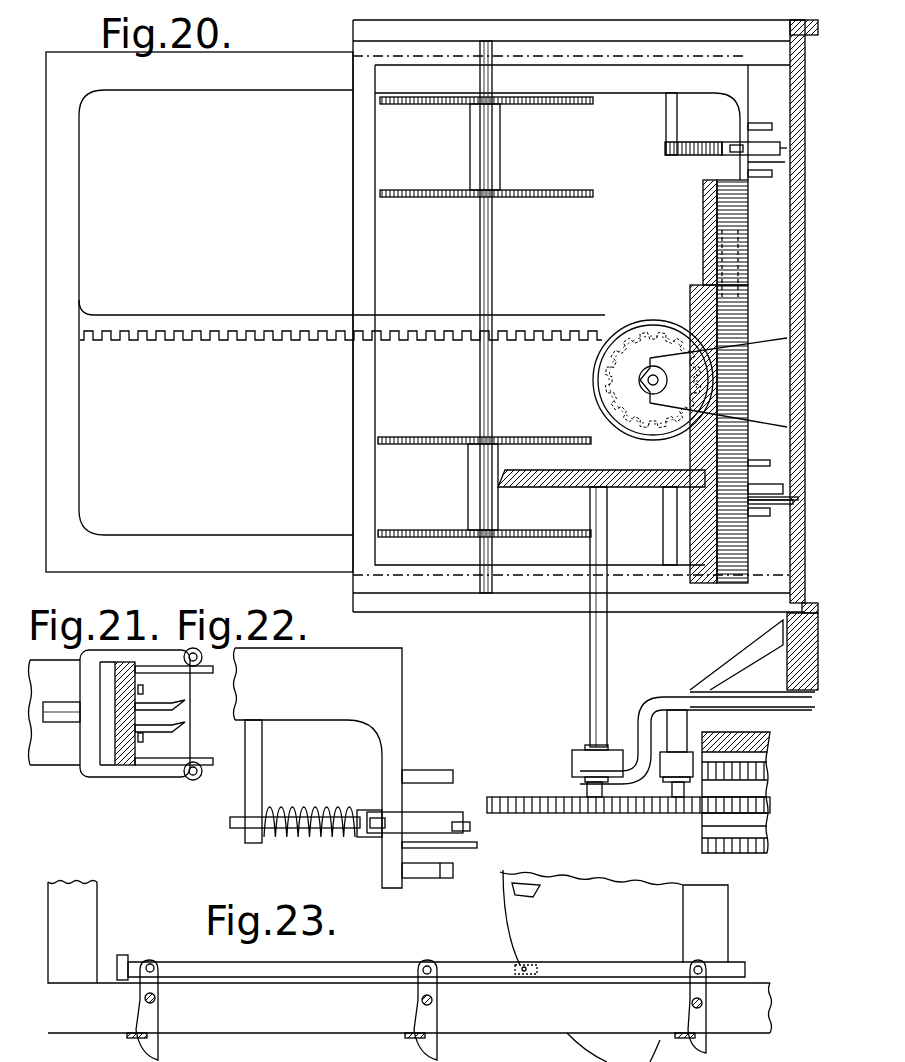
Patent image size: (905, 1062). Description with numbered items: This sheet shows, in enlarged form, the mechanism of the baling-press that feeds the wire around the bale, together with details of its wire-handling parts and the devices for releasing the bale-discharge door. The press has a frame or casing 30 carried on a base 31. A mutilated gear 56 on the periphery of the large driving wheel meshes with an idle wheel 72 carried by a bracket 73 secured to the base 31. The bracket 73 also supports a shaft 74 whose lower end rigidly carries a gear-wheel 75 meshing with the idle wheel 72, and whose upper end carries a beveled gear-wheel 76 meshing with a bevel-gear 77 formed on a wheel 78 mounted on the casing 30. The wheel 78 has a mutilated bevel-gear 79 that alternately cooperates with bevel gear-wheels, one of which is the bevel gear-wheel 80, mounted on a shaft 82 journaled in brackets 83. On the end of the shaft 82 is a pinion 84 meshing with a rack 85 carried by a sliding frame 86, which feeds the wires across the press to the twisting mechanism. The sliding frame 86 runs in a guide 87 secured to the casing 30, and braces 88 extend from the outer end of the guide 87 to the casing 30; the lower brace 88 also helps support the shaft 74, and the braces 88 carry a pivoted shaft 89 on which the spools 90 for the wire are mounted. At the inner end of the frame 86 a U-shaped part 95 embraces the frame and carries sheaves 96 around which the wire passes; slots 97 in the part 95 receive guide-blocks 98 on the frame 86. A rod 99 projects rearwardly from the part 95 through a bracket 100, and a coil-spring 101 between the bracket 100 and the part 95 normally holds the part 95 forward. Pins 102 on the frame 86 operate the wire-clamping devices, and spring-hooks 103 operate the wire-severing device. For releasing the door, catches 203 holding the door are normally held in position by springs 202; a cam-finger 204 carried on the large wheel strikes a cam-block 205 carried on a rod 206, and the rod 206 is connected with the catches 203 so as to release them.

In FIG. 20, the frame or casing 30 is at (793, 238).
In FIG. 20, the base 31 is at (792, 673).
In FIG. 23, the base 31 is at (410, 966).
In FIG. 20, the mutilated gear 56 is at (755, 805).
In FIG. 20, the idle wheel 72 is at (678, 815).
In FIG. 20, the bracket 73 is at (678, 697).
In FIG. 20, the shaft 74 is at (598, 660).
In FIG. 20, the gear-wheel 75 is at (535, 800).
In FIG. 20, the beveled gear-wheel 76 is at (590, 476).
In FIG. 20, the bevel-gear 77 is at (690, 455).
In FIG. 20, the wheel 78 is at (734, 275).
In FIG. 20, the mutilated bevel-gear 79 is at (703, 203).
In FIG. 20, the bevel gear-wheel 80 is at (650, 327).
In FIG. 20, the shaft 82 is at (640, 382).
In FIG. 20, the brackets 83 is at (762, 344).
In FIG. 20, the pinion 84 is at (612, 376).
In FIG. 20, the rack 85 is at (536, 328).
In FIG. 20, the sliding frame 86 is at (204, 548).
In FIG. 22, the sliding frame 86 is at (318, 768).
In FIG. 20, the guide 87 is at (356, 258).
In FIG. 20, the braces 88 is at (640, 33).
In FIG. 20, the shaft 89 is at (490, 378).
In FIG. 20, the spools 90 is at (533, 196).
In FIG. 20, the U-shaped part 95 is at (738, 150).
In FIG. 21, the U-shaped part 95 is at (97, 768).
In FIG. 22, the U-shaped part 95 is at (363, 812).
In FIG. 21, the sheaves 96 is at (198, 668).
In FIG. 22, the sheaves 96 is at (462, 822).
In FIG. 22, the slots 97 is at (428, 822).
In FIG. 22, the guide-blocks 98 is at (385, 826).
In FIG. 21, the rod 99 is at (62, 708).
In FIG. 22, the rod 99 is at (307, 812).
In FIG. 20, the bracket 100 is at (666, 128).
In FIG. 22, the bracket 100 is at (256, 743).
In FIG. 22, the coil-spring 101 is at (300, 838).
In FIG. 20, the pins 102 is at (773, 505).
In FIG. 21, the pins 102 is at (215, 669).
In FIG. 22, the pins 102 is at (478, 845).
In FIG. 21, the spring-hooks 103 is at (182, 722).
In FIG. 22, the spring-hooks 103 is at (430, 776).
In FIG. 23, the springs 202 is at (168, 1025).
In FIG. 23, the catches 203 is at (145, 1017).
In FIG. 23, the cam-finger 204 is at (540, 894).
In FIG. 23, the cam-block 205 is at (536, 966).
In FIG. 23, the rod 206 is at (390, 970).